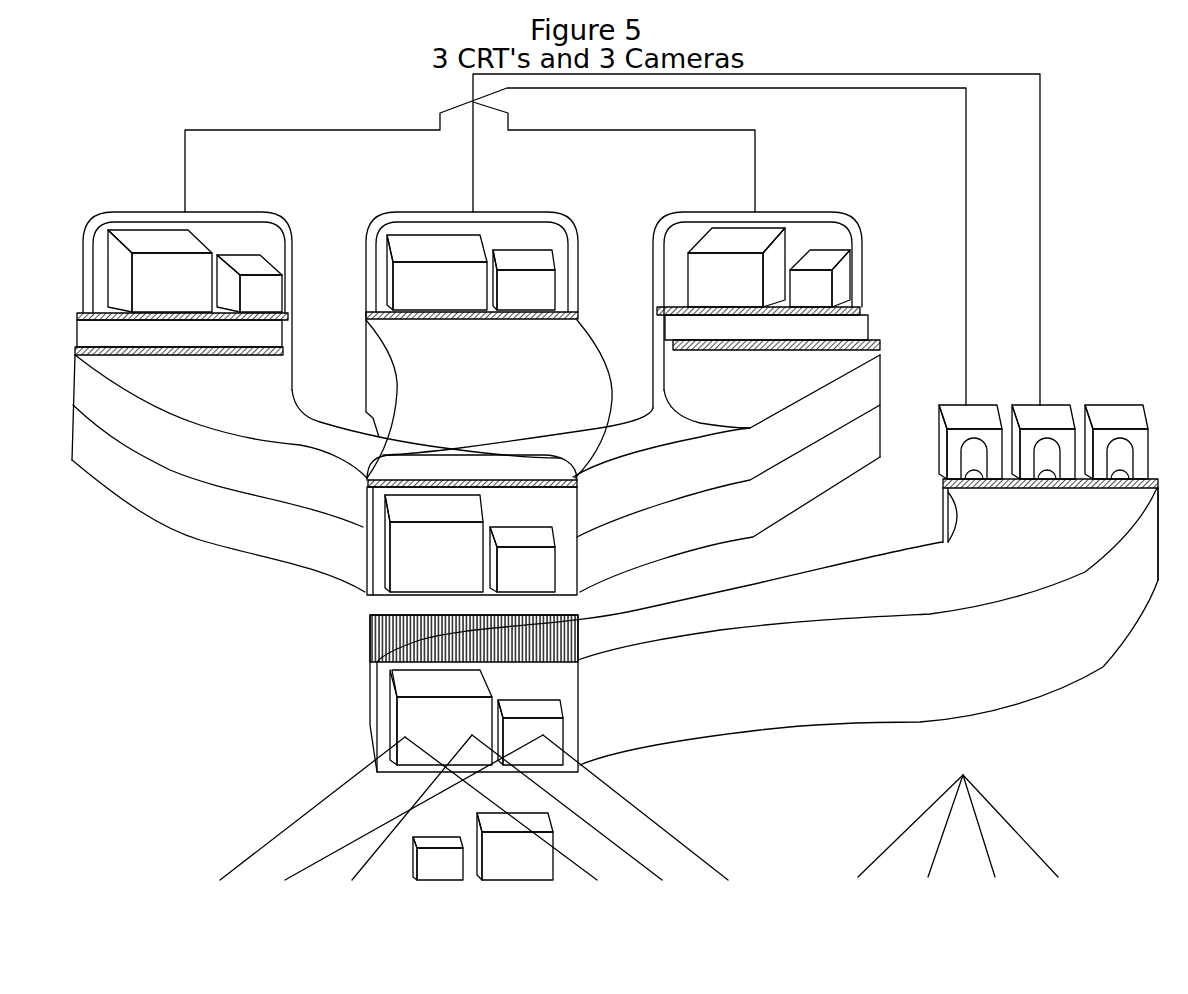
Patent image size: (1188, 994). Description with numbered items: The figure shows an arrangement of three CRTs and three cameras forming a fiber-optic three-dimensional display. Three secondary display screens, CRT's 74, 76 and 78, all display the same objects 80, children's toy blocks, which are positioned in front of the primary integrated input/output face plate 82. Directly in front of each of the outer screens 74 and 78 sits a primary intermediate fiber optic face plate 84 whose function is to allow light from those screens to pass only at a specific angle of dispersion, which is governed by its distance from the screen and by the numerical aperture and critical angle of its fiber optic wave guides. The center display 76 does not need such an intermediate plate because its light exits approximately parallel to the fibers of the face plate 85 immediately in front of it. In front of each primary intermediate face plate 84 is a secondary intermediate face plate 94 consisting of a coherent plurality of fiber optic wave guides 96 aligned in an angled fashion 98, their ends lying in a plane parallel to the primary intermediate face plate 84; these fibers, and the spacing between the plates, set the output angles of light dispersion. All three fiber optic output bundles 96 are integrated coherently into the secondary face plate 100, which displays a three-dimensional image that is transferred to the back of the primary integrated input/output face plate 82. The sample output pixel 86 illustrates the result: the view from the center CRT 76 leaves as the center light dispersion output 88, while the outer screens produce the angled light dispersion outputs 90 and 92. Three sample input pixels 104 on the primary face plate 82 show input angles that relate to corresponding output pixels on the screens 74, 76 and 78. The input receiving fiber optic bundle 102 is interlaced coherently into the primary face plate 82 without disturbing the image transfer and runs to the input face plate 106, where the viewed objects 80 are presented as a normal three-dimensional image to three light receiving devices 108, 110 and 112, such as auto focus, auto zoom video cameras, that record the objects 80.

The secondary display screen 74 is at (118, 216).
The center secondary display screen 76 is at (435, 212).
The secondary display screen 78 is at (728, 212).
The objects 80 is at (540, 857).
The primary integrated input/output face plate 82 is at (383, 692).
The primary intermediate fiber optic face plate 84 is at (95, 327).
The face plate 85 is at (367, 315).
The sample output pixel 86 is at (958, 808).
The center light dispersion output 88 is at (952, 826).
The angled light dispersion output 90 is at (910, 826).
The angled light dispersion output 92 is at (963, 775).
The secondary intermediate face plate 94 is at (70, 405).
The fiber optic wave guides 96 is at (207, 498).
The angled fiber alignment 98 is at (285, 348).
The secondary face plate 100 is at (380, 578).
The input receiving fiber optic bundle 102 is at (880, 678).
The sample input pixels 104 is at (405, 740).
The input face plate 106 is at (1078, 487).
The light receiving device 108 is at (977, 421).
The light receiving device 110 is at (1056, 421).
The light receiving device 112 is at (1123, 421).